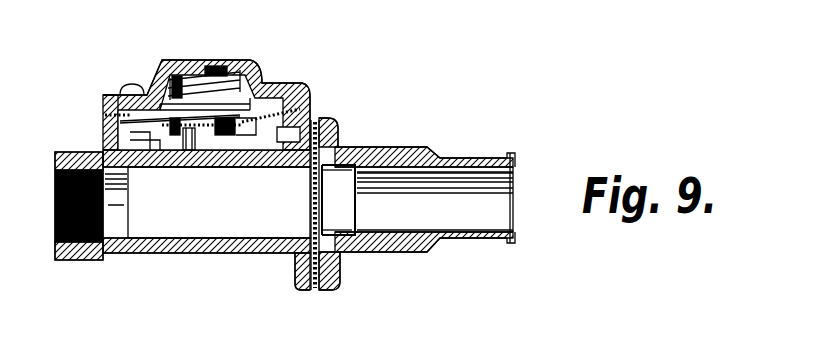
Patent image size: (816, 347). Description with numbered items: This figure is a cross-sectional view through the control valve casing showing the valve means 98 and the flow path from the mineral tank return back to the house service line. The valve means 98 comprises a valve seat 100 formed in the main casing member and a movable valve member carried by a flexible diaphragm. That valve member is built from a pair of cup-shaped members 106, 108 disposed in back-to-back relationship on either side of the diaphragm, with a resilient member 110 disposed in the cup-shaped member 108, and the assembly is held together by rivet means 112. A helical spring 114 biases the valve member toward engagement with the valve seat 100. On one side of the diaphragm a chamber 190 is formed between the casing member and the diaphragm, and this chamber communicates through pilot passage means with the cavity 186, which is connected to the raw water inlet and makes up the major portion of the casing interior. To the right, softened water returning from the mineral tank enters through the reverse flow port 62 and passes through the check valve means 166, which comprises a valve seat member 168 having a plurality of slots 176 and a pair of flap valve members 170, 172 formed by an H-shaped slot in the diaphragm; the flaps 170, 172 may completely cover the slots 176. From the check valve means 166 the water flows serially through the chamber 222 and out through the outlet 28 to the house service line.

The outlet 28 is at (56, 215).
The reverse flow port 62 is at (506, 204).
The valve means 98 is at (170, 86).
The valve seat 100 is at (184, 164).
The cup-shaped member 106 is at (246, 122).
The cup-shaped member 108 is at (300, 115).
The resilient member 110 is at (230, 150).
The rivet means 112 is at (201, 166).
The helical spring 114 is at (193, 86).
The check valve means 166 is at (335, 215).
The valve seat member 168 is at (336, 148).
The flap valve member 170 is at (306, 188).
The flap valve member 172 is at (304, 214).
The slots 176 is at (327, 188).
The cavity 186 is at (104, 140).
The chamber 190 is at (251, 100).
The chamber 222 is at (214, 234).